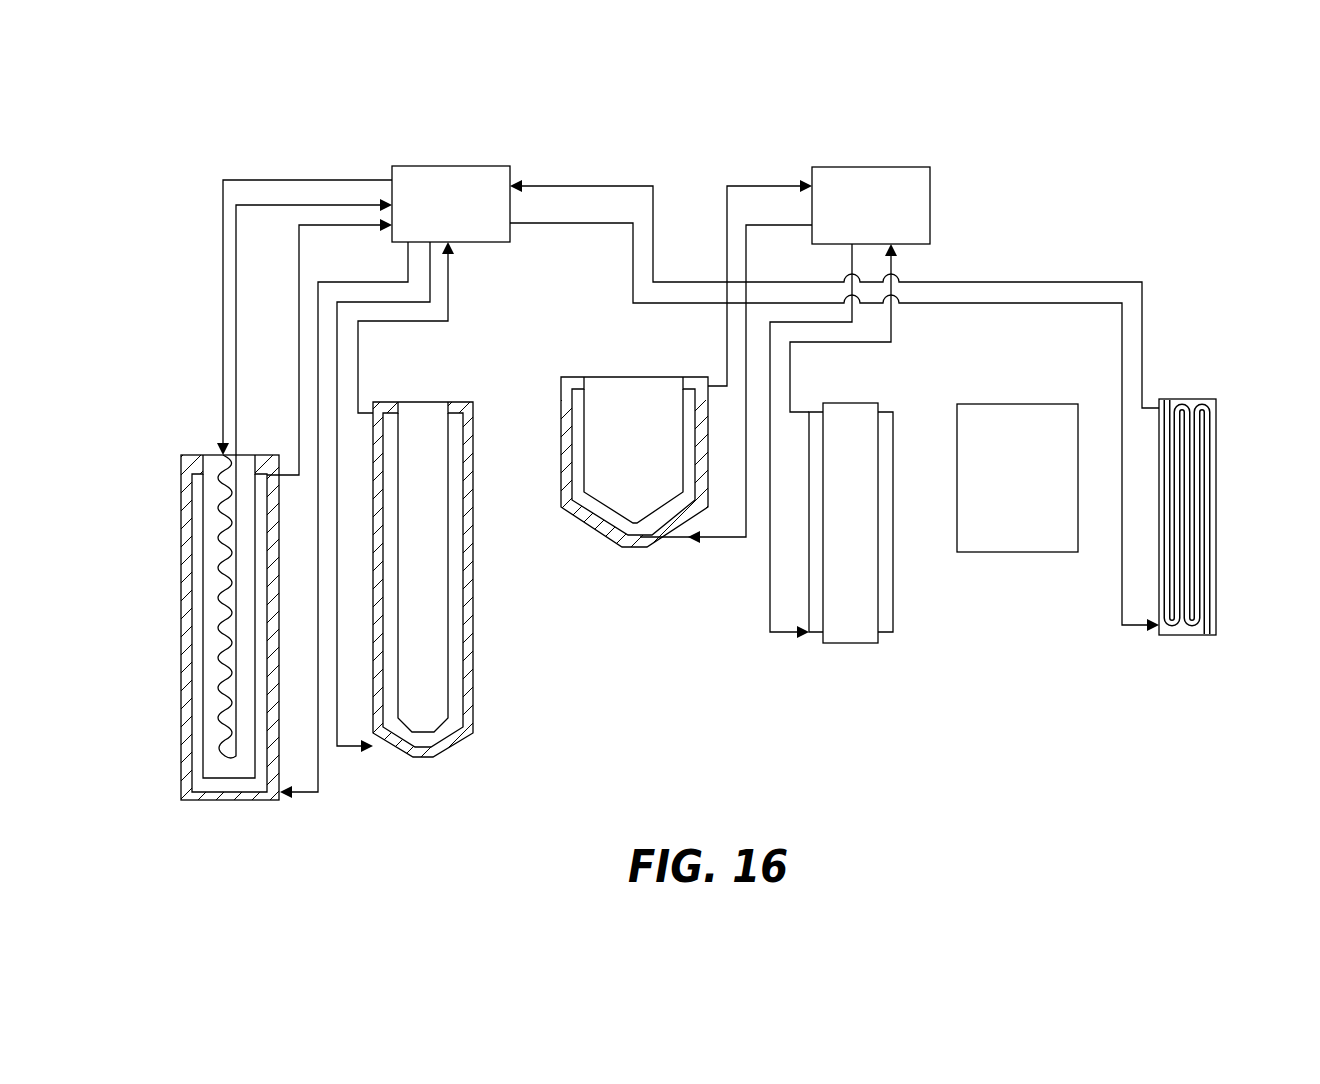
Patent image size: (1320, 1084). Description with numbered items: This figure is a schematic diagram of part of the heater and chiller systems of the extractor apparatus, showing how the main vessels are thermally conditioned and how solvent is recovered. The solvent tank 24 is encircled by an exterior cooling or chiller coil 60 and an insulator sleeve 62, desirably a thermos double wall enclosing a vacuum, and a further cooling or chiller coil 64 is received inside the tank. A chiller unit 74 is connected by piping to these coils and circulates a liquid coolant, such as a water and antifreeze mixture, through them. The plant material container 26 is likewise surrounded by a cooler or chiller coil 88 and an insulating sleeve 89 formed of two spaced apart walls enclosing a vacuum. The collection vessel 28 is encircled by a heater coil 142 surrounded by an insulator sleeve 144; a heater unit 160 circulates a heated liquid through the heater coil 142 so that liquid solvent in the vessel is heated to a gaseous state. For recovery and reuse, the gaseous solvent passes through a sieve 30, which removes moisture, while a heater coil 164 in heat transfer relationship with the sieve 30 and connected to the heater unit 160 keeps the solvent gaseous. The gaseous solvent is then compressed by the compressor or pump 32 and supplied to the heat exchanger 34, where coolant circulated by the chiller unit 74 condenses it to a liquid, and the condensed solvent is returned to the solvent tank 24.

The solvent tank 24 is at (623, 533).
The plant material container 26 is at (623, 606).
The collection vessel 28 is at (623, 587).
The sieve 30 is at (897, 551).
The compressor or pump 32 is at (1026, 402).
The heat exchanger 34 is at (1211, 480).
The exterior cooling or chiller coil 60 is at (193, 513).
The insulator sleeve 62 is at (181, 572).
The cooling or chiller coil 64 is at (216, 668).
The chiller unit 74 is at (431, 165).
The cooler or chiller coil 88 is at (462, 612).
The insulating sleeve 89 is at (475, 666).
The heater coil 142 is at (577, 407).
The insulator sleeve 144 is at (563, 461).
The heater unit 160 is at (864, 166).
The heater coil 164 is at (891, 598).